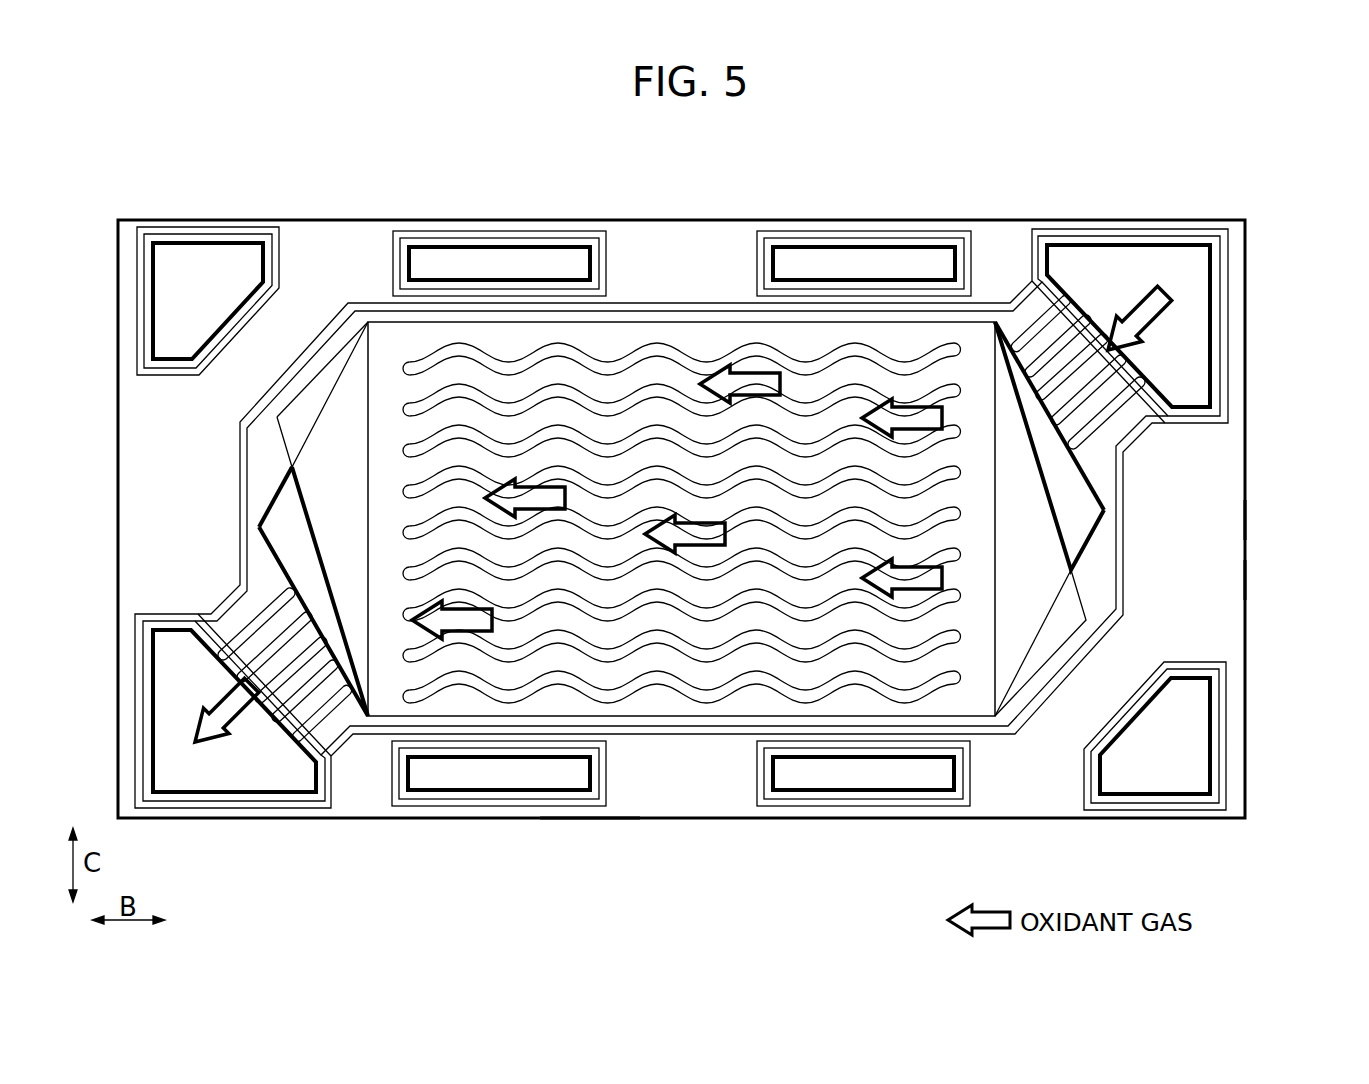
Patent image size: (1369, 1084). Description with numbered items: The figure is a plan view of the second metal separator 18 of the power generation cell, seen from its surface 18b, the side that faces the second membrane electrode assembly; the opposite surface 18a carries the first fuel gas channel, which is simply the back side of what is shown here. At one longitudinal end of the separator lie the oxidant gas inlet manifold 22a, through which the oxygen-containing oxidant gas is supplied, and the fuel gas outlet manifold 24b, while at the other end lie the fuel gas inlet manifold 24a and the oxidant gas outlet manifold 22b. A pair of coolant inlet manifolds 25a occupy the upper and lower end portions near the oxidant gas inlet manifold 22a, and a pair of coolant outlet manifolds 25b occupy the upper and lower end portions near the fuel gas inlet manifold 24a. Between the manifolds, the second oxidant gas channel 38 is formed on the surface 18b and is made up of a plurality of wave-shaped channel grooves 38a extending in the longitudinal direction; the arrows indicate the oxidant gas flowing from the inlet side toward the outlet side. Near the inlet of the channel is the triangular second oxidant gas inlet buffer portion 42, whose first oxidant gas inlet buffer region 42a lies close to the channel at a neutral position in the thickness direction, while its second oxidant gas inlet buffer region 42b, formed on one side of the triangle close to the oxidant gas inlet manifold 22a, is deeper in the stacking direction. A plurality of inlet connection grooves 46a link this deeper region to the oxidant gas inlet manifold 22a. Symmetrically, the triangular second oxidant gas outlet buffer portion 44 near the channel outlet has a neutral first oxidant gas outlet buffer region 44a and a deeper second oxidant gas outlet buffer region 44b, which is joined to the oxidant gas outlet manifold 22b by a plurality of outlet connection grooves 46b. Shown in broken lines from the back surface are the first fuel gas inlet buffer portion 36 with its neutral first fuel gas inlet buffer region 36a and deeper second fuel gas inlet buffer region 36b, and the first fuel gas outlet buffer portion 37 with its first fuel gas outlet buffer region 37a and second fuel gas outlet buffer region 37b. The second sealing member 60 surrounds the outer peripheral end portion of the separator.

The second metal separator 18 is at (319, 156).
The surface 18a is at (1210, 556).
The surface 18b is at (1233, 572).
The oxidant gas inlet manifold 22a is at (1120, 264).
The oxidant gas outlet manifold 22b is at (192, 757).
The fuel gas inlet manifold 24a is at (186, 262).
The fuel gas outlet manifold 24b is at (1152, 765).
The coolant inlet manifolds 25a is at (853, 262).
The coolant outlet manifolds 25b is at (488, 263).
The first fuel gas inlet buffer portion 36 is at (249, 394).
The first fuel gas inlet buffer region 36a is at (335, 441).
The second fuel gas inlet buffer region 36b is at (298, 420).
The first fuel gas outlet buffer portion 37 is at (1114, 643).
The first fuel gas outlet buffer region 37a is at (1028, 596).
The second fuel gas outlet buffer region 37b is at (1065, 618).
The second oxidant gas channel 38 is at (620, 346).
The wave-shaped channel grooves 38a is at (682, 433).
The second oxidant gas inlet buffer portion 42 is at (1114, 446).
The first oxidant gas inlet buffer region 42a is at (1017, 492).
The second oxidant gas inlet buffer region 42b is at (1072, 510).
The second oxidant gas outlet buffer portion 44 is at (249, 591).
The first oxidant gas outlet buffer region 44a is at (347, 545).
The second oxidant gas outlet buffer region 44b is at (293, 527).
The inlet connection grooves 46a is at (1042, 345).
The outlet connection grooves 46b is at (318, 698).
The second sealing member 60 is at (588, 819).